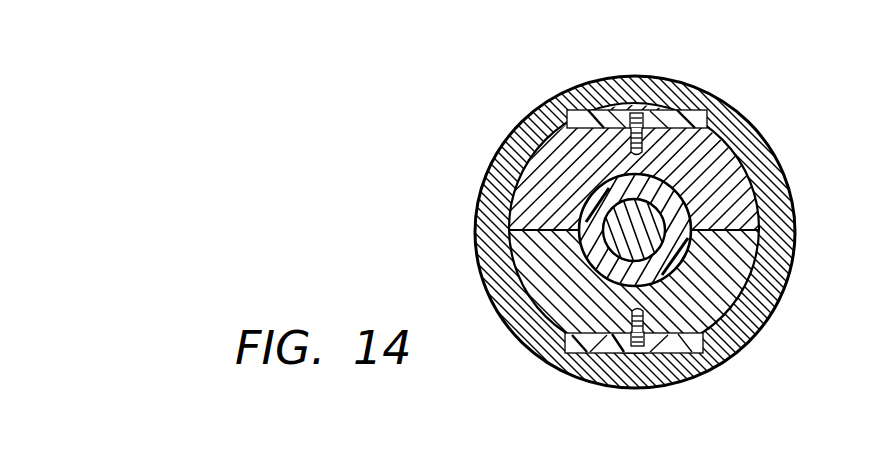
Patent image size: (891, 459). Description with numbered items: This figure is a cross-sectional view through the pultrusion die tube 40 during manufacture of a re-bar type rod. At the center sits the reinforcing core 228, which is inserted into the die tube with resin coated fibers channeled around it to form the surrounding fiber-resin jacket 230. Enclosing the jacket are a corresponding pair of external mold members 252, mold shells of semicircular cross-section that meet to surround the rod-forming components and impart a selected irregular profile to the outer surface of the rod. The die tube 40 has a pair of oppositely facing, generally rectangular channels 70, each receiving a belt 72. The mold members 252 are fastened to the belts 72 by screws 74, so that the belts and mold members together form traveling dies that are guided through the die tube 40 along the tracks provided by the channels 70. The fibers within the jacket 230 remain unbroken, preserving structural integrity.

The pultrusion die tube 40 is at (762, 327).
The channels 70 is at (697, 116).
The belt 72 is at (582, 118).
The screws 74 is at (641, 112).
The reinforcing core 228 is at (647, 221).
The fiber-resin jacket 230 is at (674, 246).
The external mold members 252 is at (553, 163).